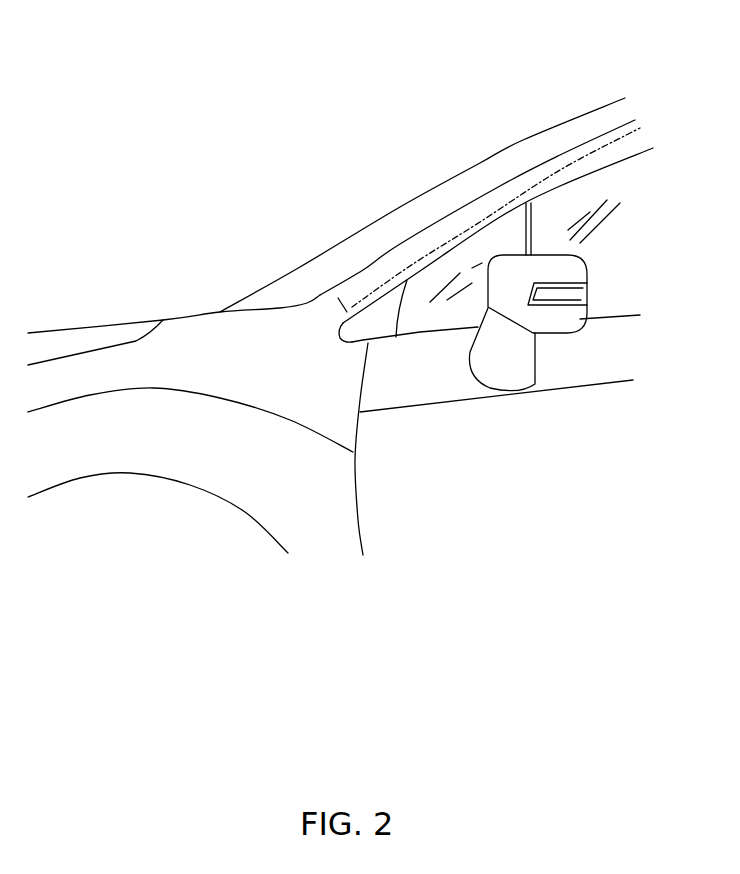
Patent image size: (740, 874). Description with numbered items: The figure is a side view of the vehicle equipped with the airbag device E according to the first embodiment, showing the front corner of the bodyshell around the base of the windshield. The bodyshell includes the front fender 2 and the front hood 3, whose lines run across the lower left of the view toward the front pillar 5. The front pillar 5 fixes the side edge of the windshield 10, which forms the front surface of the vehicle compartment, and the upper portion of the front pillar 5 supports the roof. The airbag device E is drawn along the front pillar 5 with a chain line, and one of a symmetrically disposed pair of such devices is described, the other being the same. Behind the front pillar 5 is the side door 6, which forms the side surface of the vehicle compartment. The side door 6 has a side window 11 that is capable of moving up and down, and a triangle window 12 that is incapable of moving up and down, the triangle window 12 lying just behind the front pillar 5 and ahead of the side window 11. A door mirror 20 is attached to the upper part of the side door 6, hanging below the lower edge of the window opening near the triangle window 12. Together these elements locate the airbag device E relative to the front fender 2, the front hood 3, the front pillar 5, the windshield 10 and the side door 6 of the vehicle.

The front fender 2 is at (247, 338).
The front hood 3 is at (88, 342).
The front pillar 5 is at (618, 123).
The side door 6 is at (603, 465).
The windshield 10 is at (590, 120).
The side window 11 is at (620, 250).
The triangle window 12 is at (445, 312).
The door mirror 20 is at (571, 315).
The airbag device E is at (642, 130).